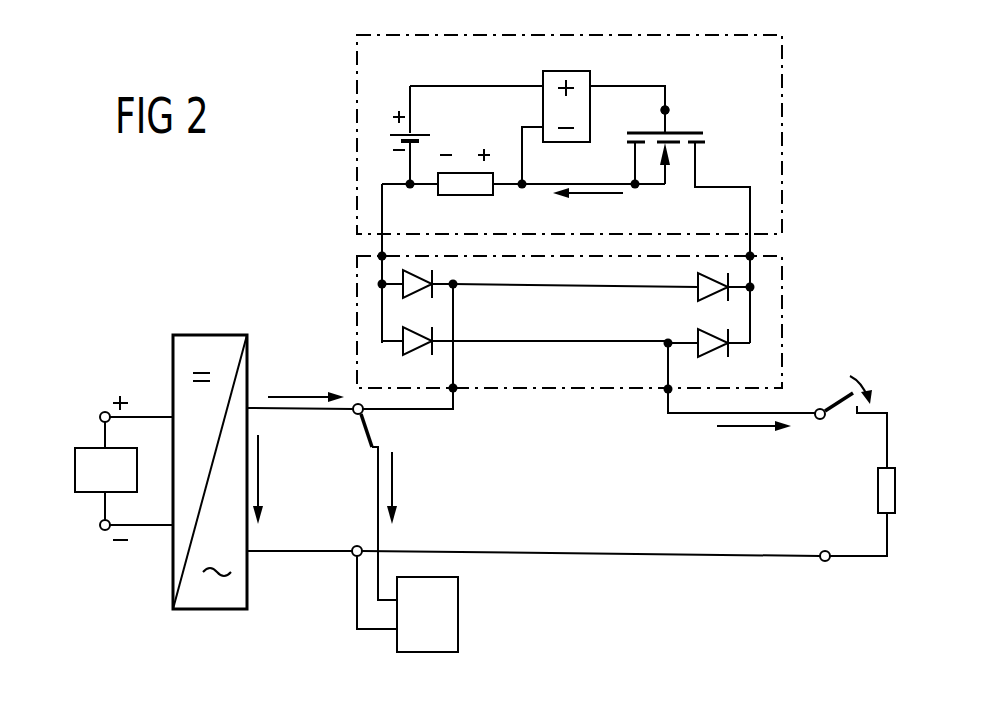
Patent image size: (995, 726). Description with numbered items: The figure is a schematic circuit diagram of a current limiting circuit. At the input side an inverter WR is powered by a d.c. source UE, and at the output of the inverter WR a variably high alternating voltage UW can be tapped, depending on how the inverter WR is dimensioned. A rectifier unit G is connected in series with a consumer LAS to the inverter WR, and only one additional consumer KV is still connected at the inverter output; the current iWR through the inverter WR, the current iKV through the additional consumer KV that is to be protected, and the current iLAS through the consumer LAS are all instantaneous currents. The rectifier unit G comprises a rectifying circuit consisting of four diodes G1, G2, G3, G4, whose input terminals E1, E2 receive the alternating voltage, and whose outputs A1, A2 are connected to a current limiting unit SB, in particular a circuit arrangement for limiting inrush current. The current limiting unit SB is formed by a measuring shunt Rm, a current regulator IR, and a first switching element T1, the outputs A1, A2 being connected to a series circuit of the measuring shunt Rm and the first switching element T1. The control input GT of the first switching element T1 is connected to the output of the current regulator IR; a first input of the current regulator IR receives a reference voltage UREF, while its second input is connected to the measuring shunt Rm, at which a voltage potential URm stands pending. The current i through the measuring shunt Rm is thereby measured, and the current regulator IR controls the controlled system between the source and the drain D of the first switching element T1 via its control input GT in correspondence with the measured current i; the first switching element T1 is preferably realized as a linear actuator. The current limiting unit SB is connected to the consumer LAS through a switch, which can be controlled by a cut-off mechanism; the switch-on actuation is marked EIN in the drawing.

The reference voltage UREF is at (390, 135).
The voltage potential URm is at (468, 171).
The measuring shunt Rm is at (476, 196).
The current regulator IR is at (592, 72).
The control input GT is at (662, 110).
The first switching element T1 is at (688, 132).
The controlled system terminal D is at (696, 160).
The current limiting unit SB is at (784, 147).
The current i is at (611, 195).
The output A1 is at (381, 256).
The output A2 is at (752, 256).
The diode G1 is at (436, 291).
The diode G2 is at (436, 346).
The diode G3 is at (697, 293).
The diode G4 is at (697, 346).
The rectifier unit G is at (569, 322).
The rectifier input E1 is at (456, 393).
The rectifier input E2 is at (665, 394).
The inverter WR is at (210, 611).
The d.c. source UE is at (84, 494).
The current through the inverter iWR is at (294, 394).
The alternating voltage UW is at (260, 478).
The current through additional consumer iKV is at (394, 478).
The additional consumer KV is at (459, 617).
The current through the consumer iLAS is at (740, 428).
The switch-on actuation EIN is at (872, 378).
The consumer LAS is at (878, 498).